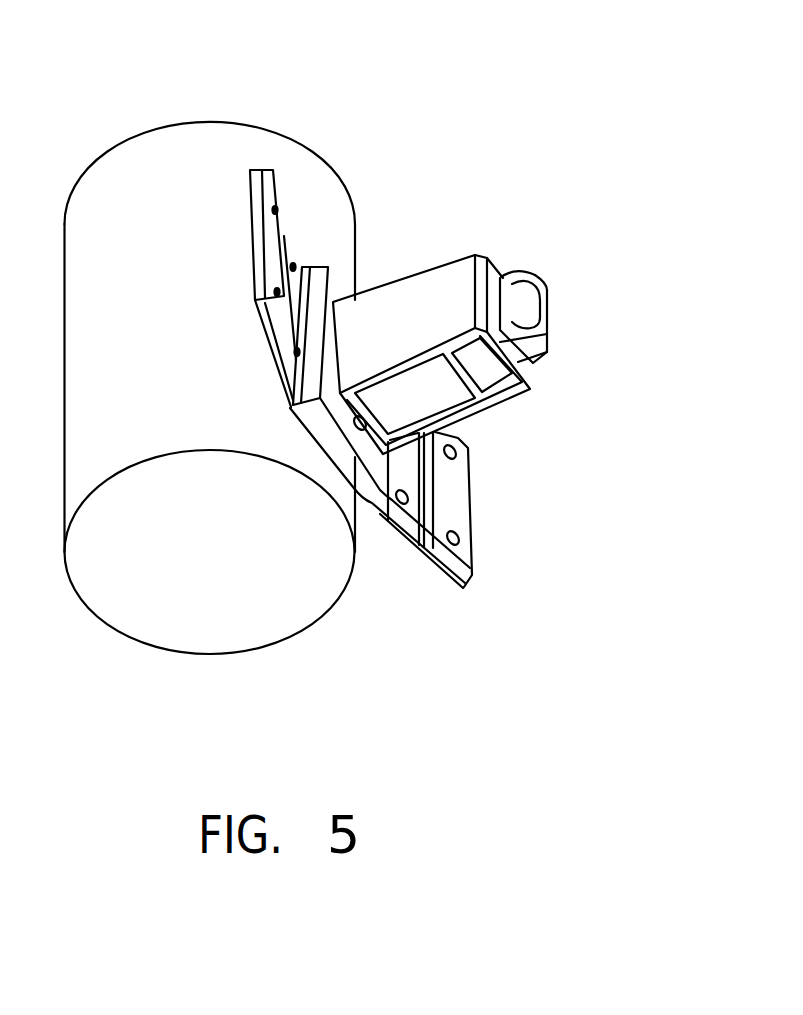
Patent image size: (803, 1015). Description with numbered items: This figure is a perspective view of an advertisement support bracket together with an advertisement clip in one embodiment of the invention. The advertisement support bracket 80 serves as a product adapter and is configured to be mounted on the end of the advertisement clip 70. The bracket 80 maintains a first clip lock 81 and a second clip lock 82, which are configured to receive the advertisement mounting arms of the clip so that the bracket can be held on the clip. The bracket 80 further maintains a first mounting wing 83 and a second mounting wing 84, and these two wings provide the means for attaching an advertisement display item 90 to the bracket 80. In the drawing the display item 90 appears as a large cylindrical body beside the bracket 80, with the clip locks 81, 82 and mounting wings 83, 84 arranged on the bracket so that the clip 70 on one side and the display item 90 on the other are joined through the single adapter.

The advertisement clip 70 is at (503, 215).
The advertisement support bracket 80 is at (467, 466).
The first clip lock 81 is at (335, 290).
The second clip lock 82 is at (355, 460).
The first mounting wing 83 is at (458, 487).
The second mounting wing 84 is at (292, 240).
The advertisement display item 90 is at (192, 612).